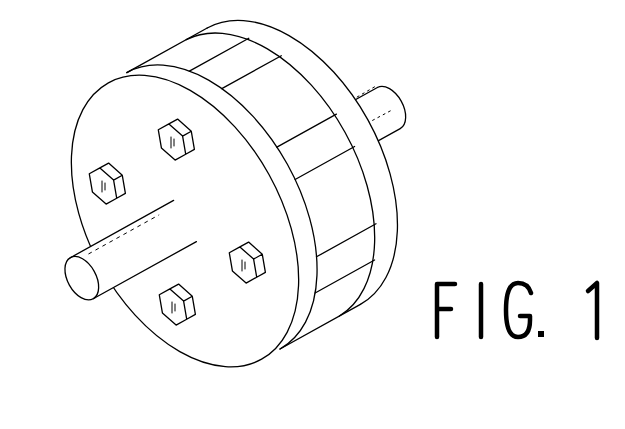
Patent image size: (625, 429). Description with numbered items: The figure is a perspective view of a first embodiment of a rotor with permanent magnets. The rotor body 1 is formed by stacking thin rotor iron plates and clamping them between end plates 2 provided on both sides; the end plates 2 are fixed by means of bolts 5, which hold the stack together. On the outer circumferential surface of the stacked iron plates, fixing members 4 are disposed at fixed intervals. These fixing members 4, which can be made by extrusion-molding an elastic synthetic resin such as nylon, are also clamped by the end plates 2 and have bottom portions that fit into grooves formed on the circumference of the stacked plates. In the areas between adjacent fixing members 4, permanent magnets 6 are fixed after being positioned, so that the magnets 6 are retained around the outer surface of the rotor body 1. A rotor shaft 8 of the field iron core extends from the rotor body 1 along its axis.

The rotor body 1 is at (135, 63).
The end plates 2 is at (147, 308).
The fixing members 4 is at (322, 133).
The bolts 5 is at (194, 321).
The permanent magnets 6 is at (347, 192).
The rotor shaft 8 is at (387, 99).